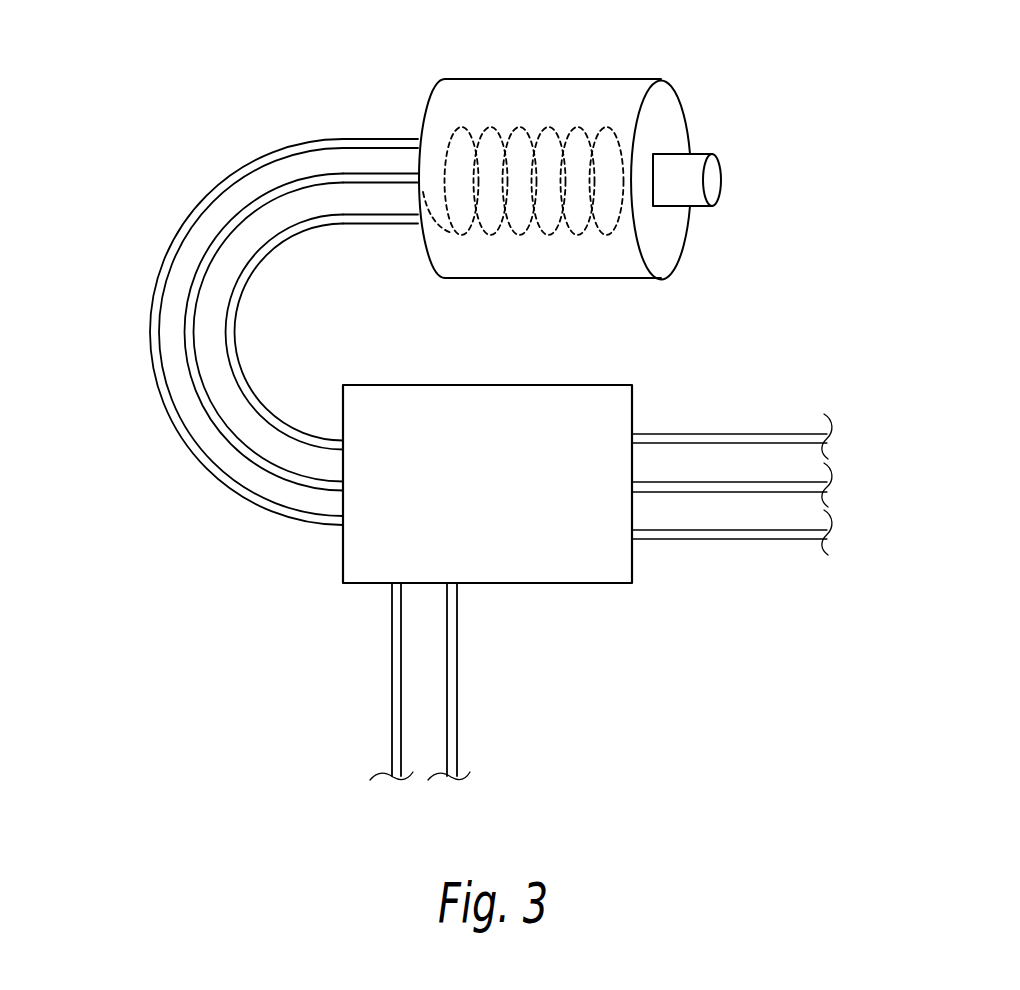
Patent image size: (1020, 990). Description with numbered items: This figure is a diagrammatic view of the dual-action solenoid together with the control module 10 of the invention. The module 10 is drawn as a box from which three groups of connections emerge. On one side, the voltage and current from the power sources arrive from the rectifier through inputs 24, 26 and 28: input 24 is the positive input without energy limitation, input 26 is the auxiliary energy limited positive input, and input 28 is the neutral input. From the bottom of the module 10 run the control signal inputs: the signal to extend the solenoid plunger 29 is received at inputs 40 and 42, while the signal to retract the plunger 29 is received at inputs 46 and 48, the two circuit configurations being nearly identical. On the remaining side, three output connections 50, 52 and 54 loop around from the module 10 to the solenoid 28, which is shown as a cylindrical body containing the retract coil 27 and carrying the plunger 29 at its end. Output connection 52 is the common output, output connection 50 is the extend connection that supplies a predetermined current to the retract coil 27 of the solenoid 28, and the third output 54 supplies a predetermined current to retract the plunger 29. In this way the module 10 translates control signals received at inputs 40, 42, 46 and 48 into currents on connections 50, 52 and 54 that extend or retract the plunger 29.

The module 10 is at (592, 605).
The input 24 is at (761, 436).
The input 26 is at (761, 485).
The retract coil 27 is at (608, 127).
The input / solenoid 28 is at (450, 18).
The plunger 29 is at (700, 153).
The input 40 is at (310, 681).
The input 42 is at (392, 704).
The input 46 is at (524, 681).
The input 48 is at (457, 708).
The output connection 50 is at (148, 320).
The output connection 52 is at (197, 267).
The output connection 54 is at (280, 233).